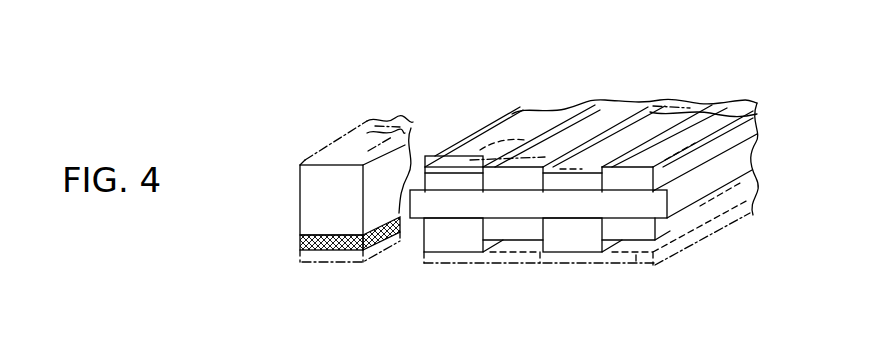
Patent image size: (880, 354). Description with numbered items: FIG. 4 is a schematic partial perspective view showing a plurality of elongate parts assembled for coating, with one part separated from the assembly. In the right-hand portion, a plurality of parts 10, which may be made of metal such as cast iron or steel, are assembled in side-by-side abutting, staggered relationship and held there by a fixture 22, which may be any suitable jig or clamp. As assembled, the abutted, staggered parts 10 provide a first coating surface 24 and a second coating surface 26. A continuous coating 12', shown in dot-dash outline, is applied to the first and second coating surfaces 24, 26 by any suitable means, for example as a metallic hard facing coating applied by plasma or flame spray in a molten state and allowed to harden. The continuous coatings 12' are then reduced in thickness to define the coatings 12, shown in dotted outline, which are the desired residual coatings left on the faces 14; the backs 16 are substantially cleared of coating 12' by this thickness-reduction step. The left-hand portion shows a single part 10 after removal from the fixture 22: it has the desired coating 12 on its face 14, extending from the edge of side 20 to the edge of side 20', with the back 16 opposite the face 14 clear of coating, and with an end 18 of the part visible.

The elongate part 10 is at (643, 100).
The coating 12 is at (452, 221).
The continuous coating 12' is at (369, 192).
The face 14 is at (333, 253).
The back 16 is at (352, 148).
The end 18 is at (320, 202).
The side 20 is at (418, 123).
The side 20' is at (275, 199).
The clamping fixture 22 is at (650, 216).
The first coating surface 24 is at (665, 43).
The second coating surface 26 is at (559, 268).